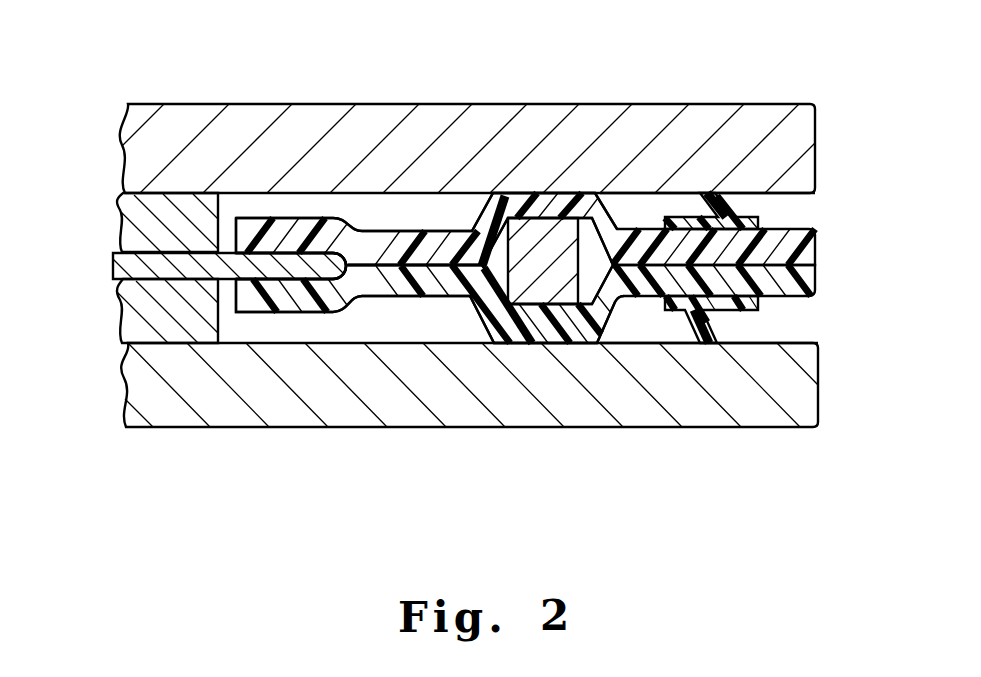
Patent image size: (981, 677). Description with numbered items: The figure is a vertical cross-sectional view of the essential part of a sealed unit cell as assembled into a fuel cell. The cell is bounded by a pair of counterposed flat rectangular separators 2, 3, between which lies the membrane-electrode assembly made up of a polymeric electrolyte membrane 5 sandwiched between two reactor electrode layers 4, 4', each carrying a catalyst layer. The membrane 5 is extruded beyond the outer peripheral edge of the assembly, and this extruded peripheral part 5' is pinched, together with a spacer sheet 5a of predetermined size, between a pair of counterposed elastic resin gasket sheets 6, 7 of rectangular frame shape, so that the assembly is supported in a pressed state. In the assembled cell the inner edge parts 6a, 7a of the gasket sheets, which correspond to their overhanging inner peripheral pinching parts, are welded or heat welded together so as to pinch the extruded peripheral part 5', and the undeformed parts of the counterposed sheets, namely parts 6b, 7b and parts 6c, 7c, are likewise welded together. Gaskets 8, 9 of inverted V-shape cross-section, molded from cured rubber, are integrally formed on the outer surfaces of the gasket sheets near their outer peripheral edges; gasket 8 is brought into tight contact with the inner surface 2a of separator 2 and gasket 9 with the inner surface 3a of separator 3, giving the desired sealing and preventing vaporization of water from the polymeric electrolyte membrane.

The separator 2 is at (752, 127).
The inner surface of separator 2a is at (800, 197).
The separator 3 is at (803, 405).
The inner surface of separator 3a is at (793, 346).
The reactor electrode layer 4 is at (138, 220).
The reactor electrode layer 4' is at (136, 312).
The polymeric electrolyte membrane 5 is at (202, 269).
The extruded peripheral part of polymeric electrolyte membrane 5' is at (274, 147).
The spacer sheet 5a is at (545, 247).
The gasket sheet 6 is at (790, 233).
The inner edge part of gasket sheet 6a is at (313, 228).
The undeformed part of gasket sheet 6b is at (412, 242).
The undeformed part of gasket sheet 6c is at (640, 243).
The gasket sheet 7 is at (788, 297).
The inner edge part of gasket sheet 7a is at (295, 293).
The undeformed part of gasket sheet 7b is at (403, 283).
The undeformed part of gasket sheet 7c is at (650, 283).
The gasket 8 is at (708, 194).
The gasket 9 is at (722, 327).